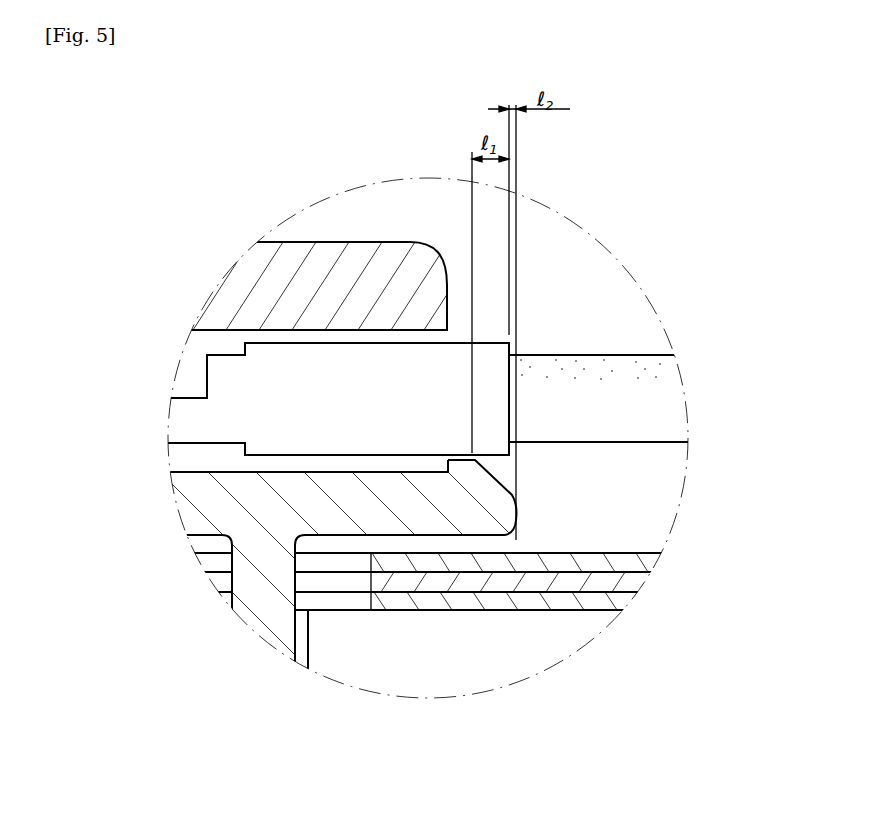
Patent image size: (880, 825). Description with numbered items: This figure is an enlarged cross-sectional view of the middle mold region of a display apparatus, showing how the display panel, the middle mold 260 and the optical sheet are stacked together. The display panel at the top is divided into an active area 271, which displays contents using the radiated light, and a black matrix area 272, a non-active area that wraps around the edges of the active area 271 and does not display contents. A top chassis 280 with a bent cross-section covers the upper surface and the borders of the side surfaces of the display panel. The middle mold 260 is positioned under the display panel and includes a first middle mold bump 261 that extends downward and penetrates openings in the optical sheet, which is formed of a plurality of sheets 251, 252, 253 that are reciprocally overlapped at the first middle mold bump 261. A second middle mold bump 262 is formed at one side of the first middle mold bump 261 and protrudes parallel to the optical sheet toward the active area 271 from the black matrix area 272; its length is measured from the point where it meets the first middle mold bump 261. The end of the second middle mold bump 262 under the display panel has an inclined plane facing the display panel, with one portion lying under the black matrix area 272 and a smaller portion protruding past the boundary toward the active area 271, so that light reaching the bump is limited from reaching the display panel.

The top chassis 280 is at (293, 255).
The black matrix area 272 is at (405, 377).
The active area 271 is at (597, 364).
The second middle mold bump 262 is at (505, 510).
The middle mold 260 is at (195, 498).
The first middle mold bump 261 is at (260, 620).
The sheet 253 is at (655, 555).
The sheet 252 is at (635, 582).
The sheet 251 is at (627, 598).